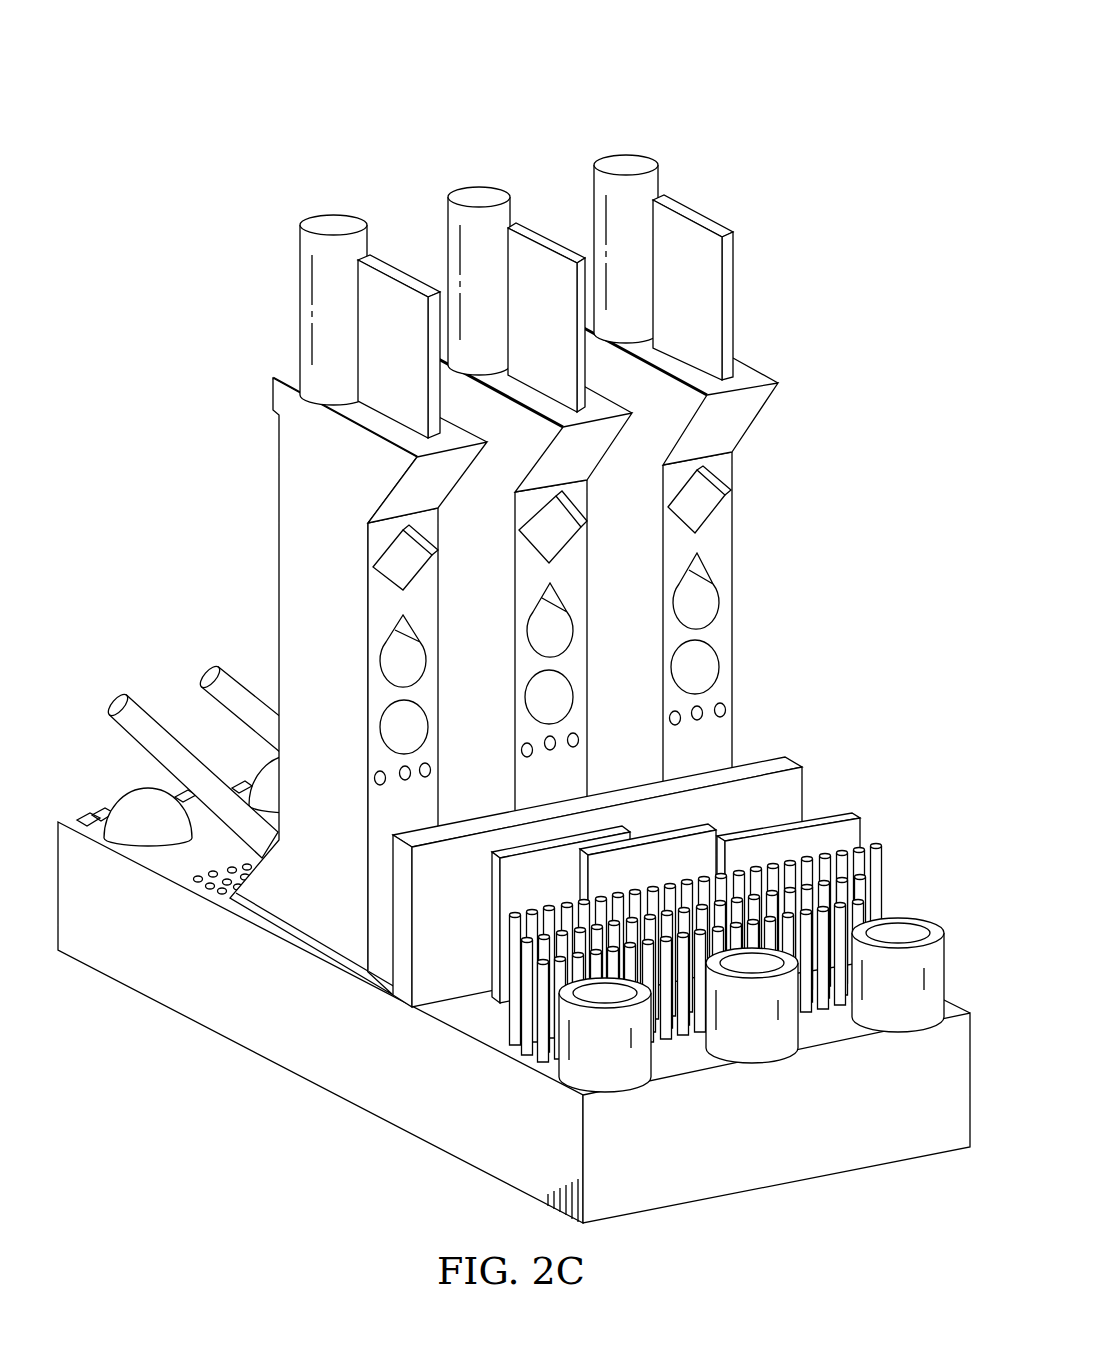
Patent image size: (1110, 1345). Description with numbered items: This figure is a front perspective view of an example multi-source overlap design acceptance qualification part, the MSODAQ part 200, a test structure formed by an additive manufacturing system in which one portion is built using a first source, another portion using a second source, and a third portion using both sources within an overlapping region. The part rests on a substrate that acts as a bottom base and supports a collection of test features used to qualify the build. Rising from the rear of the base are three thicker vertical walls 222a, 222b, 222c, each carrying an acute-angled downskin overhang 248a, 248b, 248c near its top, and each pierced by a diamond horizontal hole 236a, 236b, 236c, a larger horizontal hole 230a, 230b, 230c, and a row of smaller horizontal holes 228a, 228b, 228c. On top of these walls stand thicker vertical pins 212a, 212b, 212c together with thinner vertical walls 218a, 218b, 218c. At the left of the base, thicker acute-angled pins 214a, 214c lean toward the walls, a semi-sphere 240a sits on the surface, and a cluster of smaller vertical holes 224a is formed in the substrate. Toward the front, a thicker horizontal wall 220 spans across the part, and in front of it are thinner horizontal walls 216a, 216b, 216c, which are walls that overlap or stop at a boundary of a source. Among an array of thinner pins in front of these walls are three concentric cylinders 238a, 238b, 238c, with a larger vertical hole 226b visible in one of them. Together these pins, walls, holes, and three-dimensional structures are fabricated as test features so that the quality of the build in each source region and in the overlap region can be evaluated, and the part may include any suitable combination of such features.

The MSODAQ part 200 is at (248, 66).
The thicker vertical pin 212a is at (330, 215).
The thicker vertical pin 212b is at (625, 160).
The thicker vertical pin 212c is at (477, 188).
The thinner vertical wall 218a is at (395, 265).
The thinner vertical wall 218b is at (700, 210).
The thinner vertical wall 218c is at (541, 235).
The acute-angled downskin overhang 248a is at (405, 498).
The acute-angled downskin overhang 248b is at (760, 416).
The acute-angled downskin overhang 248c is at (527, 500).
The diamond horizontal hole 236a is at (393, 565).
The diamond horizontal hole 236b is at (720, 513).
The diamond horizontal hole 236c is at (555, 540).
The thicker vertical wall 222a is at (380, 955).
The thicker vertical wall 222b is at (725, 560).
The thicker vertical wall 222c is at (533, 793).
The larger horizontal hole 230a is at (390, 725).
The larger horizontal hole 230b is at (725, 666).
The larger horizontal hole 230c is at (540, 703).
The smaller horizontal hole 228a is at (380, 788).
The smaller horizontal hole 228b is at (728, 712).
The smaller horizontal hole 228c is at (576, 742).
The thicker acute-angled pin 214a is at (128, 695).
The thicker acute-angled pin 214c is at (222, 668).
The semi-sphere 240a is at (128, 792).
The smaller vertical hole 224a is at (180, 878).
The thicker horizontal wall 220 is at (805, 778).
The thinner horizontal wall 216a is at (628, 832).
The thinner horizontal wall 216b is at (860, 830).
The thinner horizontal wall 216c is at (720, 838).
The larger vertical hole 226b is at (907, 925).
The concentric cylinder 238a is at (653, 1057).
The concentric cylinder 238b is at (943, 1007).
The concentric cylinder 238c is at (798, 1027).